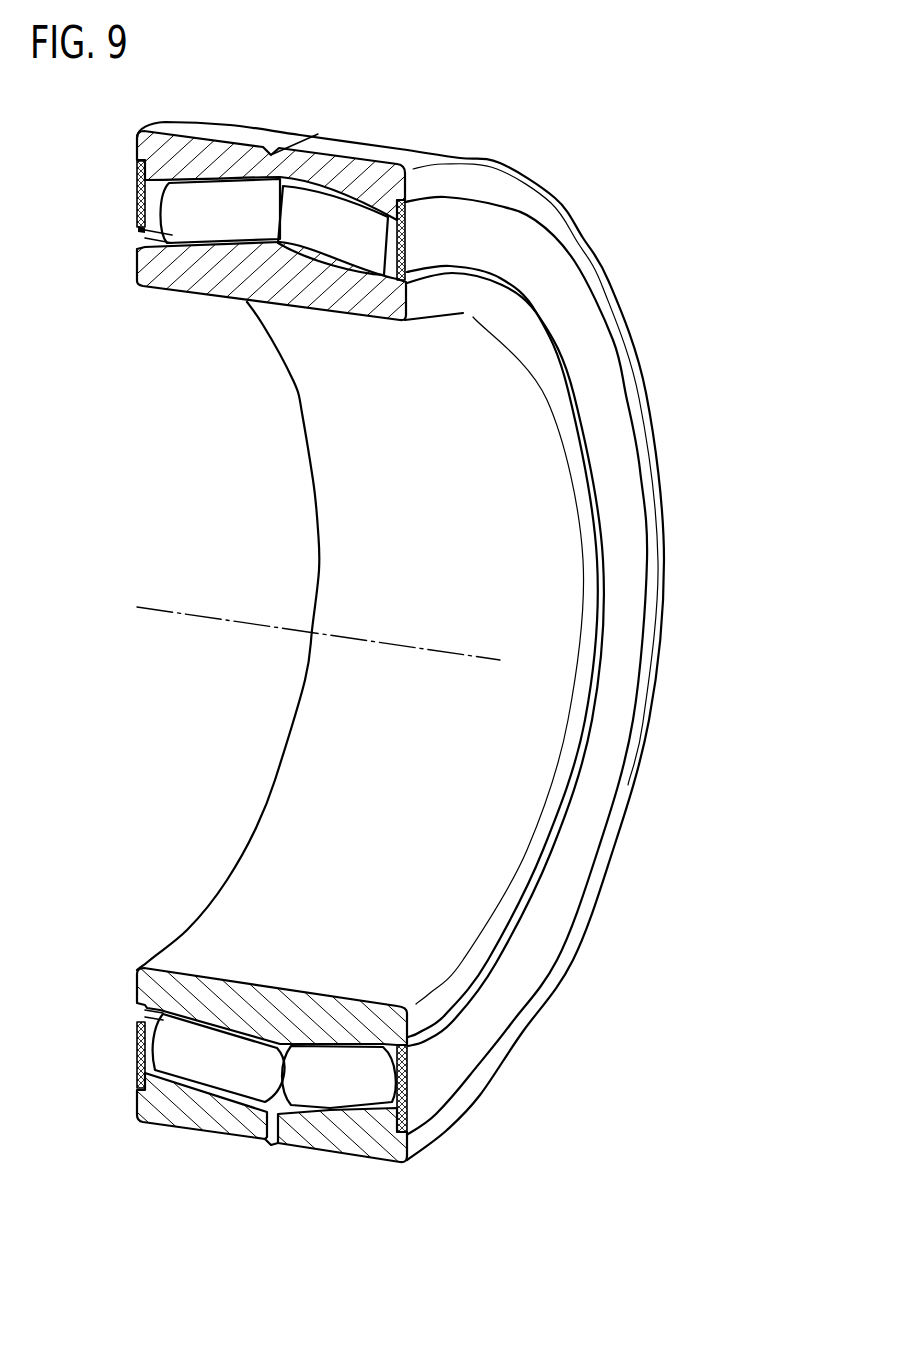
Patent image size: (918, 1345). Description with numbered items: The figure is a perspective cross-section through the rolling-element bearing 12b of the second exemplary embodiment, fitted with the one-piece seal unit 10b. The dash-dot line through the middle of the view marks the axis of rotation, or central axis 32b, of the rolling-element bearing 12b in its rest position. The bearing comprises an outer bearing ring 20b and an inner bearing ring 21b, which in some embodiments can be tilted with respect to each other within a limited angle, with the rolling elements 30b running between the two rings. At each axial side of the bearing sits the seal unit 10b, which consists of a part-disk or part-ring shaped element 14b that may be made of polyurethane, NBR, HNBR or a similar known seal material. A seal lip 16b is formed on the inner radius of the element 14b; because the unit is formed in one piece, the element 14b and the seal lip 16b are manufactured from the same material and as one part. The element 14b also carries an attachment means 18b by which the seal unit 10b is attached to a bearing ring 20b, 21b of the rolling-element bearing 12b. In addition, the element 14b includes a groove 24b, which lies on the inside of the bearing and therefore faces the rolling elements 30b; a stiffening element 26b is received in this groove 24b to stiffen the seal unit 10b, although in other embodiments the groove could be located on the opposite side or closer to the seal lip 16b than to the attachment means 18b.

The rolling-element bearing 12b is at (573, 123).
The seal unit 10b is at (653, 408).
The part-ring shaped element 14b is at (623, 672).
The seal lip 16b is at (140, 1020).
The attachment means 18b is at (402, 1147).
The outer bearing ring 20b is at (617, 286).
The inner bearing ring 21b is at (300, 409).
The groove 24b is at (143, 224).
The stiffening element 26b is at (147, 238).
The rolling elements 30b is at (303, 1057).
The central axis 32b is at (155, 607).